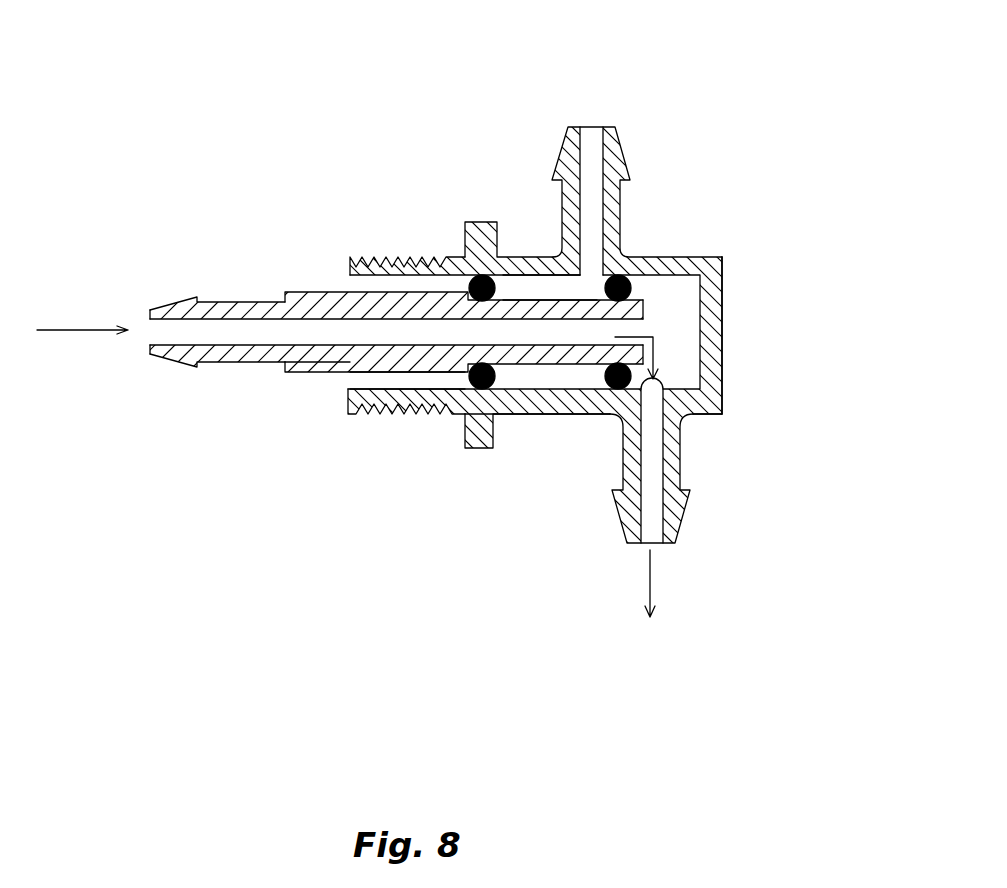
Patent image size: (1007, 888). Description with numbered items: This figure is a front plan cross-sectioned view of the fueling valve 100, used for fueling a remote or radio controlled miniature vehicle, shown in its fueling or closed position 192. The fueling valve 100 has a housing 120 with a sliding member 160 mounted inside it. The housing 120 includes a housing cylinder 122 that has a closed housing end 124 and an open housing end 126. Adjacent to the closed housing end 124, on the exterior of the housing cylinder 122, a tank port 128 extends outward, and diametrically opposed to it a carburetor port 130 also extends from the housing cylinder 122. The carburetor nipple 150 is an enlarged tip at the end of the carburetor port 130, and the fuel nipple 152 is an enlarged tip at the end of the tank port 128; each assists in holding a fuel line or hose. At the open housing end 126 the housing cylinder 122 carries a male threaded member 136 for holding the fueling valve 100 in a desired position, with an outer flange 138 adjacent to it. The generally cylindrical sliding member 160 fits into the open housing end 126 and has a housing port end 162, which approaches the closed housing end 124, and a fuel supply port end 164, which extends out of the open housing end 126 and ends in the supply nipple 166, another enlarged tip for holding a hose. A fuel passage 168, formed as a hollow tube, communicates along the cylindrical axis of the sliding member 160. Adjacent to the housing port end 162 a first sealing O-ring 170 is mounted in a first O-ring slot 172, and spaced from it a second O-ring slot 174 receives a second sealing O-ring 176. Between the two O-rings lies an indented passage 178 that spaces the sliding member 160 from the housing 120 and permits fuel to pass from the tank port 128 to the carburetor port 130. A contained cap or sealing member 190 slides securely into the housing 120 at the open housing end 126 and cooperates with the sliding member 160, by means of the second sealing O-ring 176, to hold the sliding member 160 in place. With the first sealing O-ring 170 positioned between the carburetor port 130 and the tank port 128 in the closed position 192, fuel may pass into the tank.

The fueling valve 100 is at (503, 444).
The housing 120 is at (503, 444).
The housing cylinder 122 is at (535, 416).
The closed housing end 124 is at (725, 343).
The open housing end 126 is at (340, 273).
The tank port 128 is at (655, 535).
The carburetor port 130 is at (594, 144).
The male threaded member 136 is at (398, 263).
The outer flange 138 is at (478, 450).
The carburetor nipple 150 is at (553, 155).
The fuel nipple 152 is at (617, 525).
The sliding member 160 is at (503, 444).
The housing port end 162 is at (648, 307).
The fuel supply port end 164 is at (150, 307).
The supply nipple 166 is at (180, 363).
The fuel passage 168 is at (147, 337).
The first sealing O-ring 170 is at (612, 392).
The first O-ring slot 172 is at (632, 284).
The second O-ring slot 174 is at (472, 278).
The second sealing O-ring 176 is at (473, 390).
The indented passage 178 is at (541, 285).
The sealing member 190 is at (367, 382).
The closed position 192 is at (303, 601).